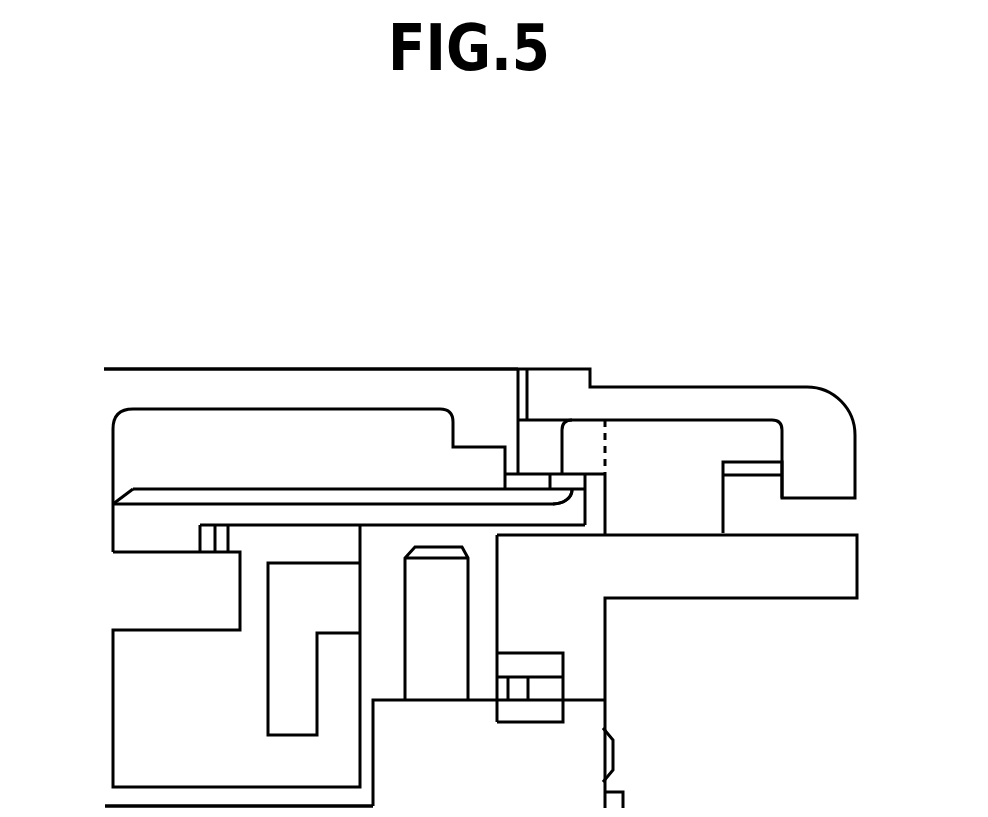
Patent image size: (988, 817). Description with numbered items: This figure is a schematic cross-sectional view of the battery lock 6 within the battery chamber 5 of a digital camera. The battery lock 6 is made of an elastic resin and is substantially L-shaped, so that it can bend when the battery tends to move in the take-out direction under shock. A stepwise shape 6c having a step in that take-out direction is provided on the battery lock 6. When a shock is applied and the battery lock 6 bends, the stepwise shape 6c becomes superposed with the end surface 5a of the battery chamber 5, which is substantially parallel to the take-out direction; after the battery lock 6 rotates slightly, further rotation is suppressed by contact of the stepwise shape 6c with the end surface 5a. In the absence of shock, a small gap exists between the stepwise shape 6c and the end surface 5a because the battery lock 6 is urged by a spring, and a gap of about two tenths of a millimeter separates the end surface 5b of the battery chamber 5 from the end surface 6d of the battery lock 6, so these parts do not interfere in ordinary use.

The battery chamber 5 is at (832, 577).
The end surface of the battery chamber 5a is at (583, 443).
The end surface of the battery chamber 5b is at (593, 475).
The battery lock 6 is at (130, 686).
The stepwise shape 6c is at (552, 490).
The end surface of the battery lock 6d is at (552, 490).